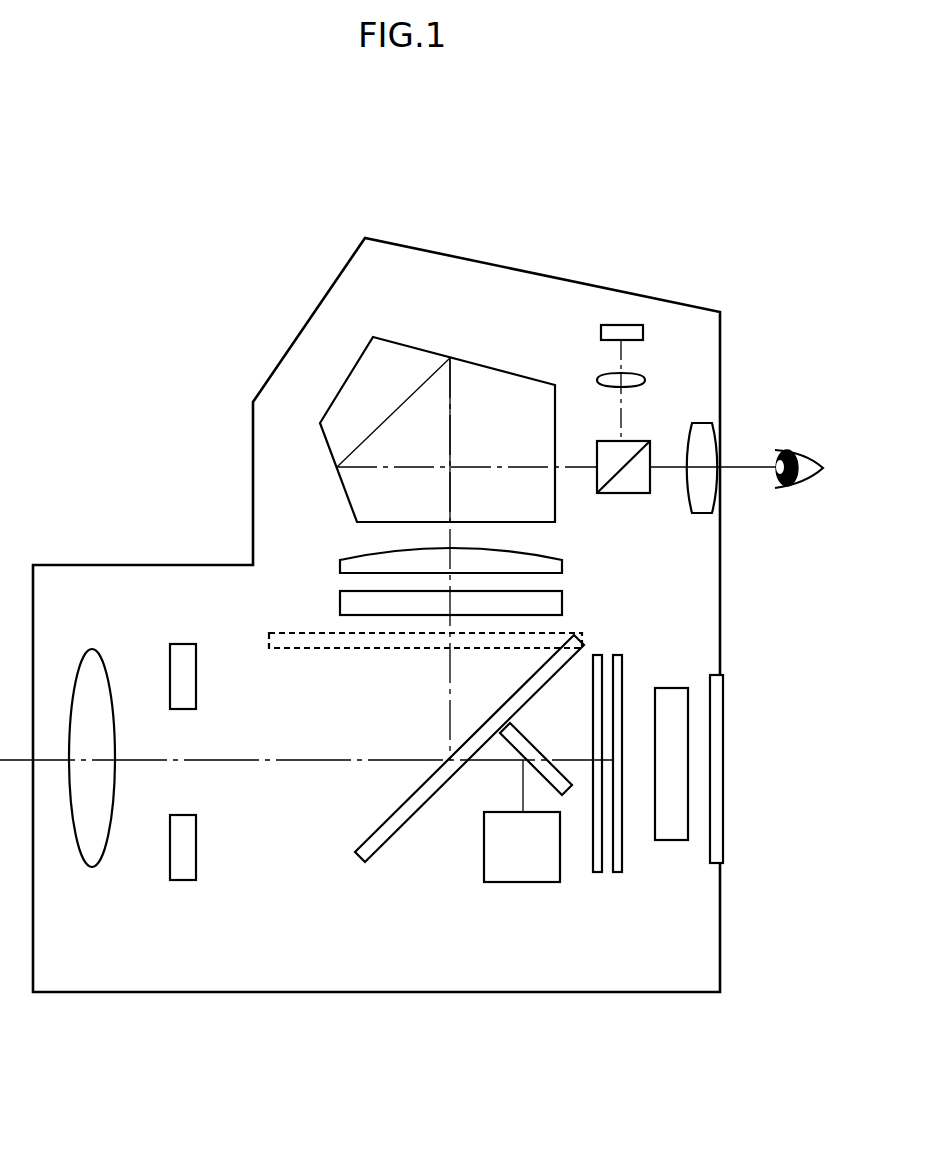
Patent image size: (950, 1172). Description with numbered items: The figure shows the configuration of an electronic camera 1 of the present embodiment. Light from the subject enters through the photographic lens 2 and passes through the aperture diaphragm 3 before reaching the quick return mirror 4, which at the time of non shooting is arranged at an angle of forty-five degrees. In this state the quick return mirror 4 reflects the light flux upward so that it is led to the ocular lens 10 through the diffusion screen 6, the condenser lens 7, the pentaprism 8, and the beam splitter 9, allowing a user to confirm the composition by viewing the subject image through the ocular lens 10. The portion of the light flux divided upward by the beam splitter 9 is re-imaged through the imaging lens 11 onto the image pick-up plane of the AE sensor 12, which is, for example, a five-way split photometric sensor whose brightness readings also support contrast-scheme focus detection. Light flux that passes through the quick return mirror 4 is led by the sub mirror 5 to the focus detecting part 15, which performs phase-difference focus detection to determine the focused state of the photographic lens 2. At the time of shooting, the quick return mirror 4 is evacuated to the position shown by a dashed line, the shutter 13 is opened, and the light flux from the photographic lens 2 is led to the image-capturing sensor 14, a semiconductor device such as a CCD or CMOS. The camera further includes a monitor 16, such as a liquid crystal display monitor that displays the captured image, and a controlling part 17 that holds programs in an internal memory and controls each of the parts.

The electronic camera 1 is at (243, 428).
The photographic lens 2 is at (93, 648).
The aperture diaphragm 3 is at (185, 644).
The quick return mirror 4 is at (353, 852).
The sub mirror 5 is at (545, 758).
The diffusion screen 6 is at (340, 600).
The condenser lens 7 is at (340, 563).
The pentaprism 8 is at (397, 340).
The beam splitter 9 is at (597, 455).
The ocular lens 10 is at (700, 513).
The imaging lens 11 is at (650, 380).
The AE sensor 12 is at (601, 330).
The shutter 13 is at (597, 652).
The image-capturing sensor 14 is at (617, 652).
The focus detecting part 15 is at (484, 840).
The monitor 16 is at (723, 693).
The controlling part 17 is at (665, 840).